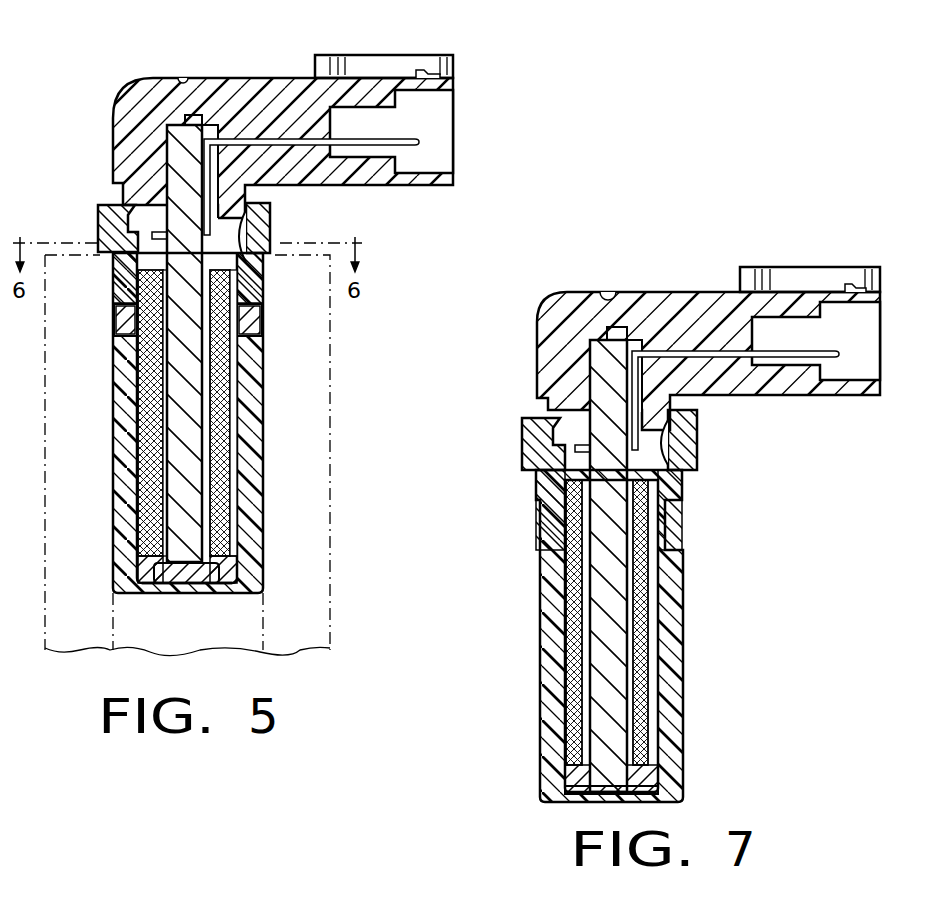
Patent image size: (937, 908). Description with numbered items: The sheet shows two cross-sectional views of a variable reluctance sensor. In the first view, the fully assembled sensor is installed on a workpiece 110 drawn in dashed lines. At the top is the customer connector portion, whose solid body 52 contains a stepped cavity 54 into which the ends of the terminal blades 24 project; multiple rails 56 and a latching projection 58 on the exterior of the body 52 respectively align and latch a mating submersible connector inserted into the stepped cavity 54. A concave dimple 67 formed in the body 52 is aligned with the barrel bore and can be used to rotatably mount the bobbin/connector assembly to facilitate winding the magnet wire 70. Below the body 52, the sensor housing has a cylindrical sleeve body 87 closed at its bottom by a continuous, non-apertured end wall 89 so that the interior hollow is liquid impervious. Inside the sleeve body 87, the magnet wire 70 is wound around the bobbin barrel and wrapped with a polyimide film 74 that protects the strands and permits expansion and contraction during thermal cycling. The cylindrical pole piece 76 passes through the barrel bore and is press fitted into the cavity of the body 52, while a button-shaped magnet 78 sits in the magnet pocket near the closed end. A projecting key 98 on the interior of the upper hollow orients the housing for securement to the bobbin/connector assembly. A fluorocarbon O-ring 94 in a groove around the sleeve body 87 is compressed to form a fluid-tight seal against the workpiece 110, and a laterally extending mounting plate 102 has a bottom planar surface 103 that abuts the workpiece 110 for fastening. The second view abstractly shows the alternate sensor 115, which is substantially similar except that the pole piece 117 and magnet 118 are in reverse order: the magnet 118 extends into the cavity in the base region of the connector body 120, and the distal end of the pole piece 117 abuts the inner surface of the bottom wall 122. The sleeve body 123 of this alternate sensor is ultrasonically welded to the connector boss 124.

In FIG. 5, the body 52 is at (127, 110).
In FIG. 5, the concave dimple 67 is at (182, 77).
In FIG. 5, the terminal blades 24 is at (273, 142).
In FIG. 7, the terminal blades 24 is at (720, 360).
In FIG. 5, the rails 56 is at (352, 62).
In FIG. 5, the latching projection 58 is at (426, 72).
In FIG. 5, the stepped cavity 54 is at (440, 107).
In FIG. 5, the key 98 is at (120, 228).
In FIG. 5, the mounting plate 102 is at (268, 228).
In FIG. 5, the planar surface 103 is at (258, 250).
In FIG. 5, the O-ring 94 is at (110, 330).
In FIG. 5, the sleeve body 87 is at (124, 386).
In FIG. 5, the workpiece 110 is at (330, 408).
In FIG. 5, the pole piece 76 is at (180, 480).
In FIG. 5, the polyimide film 74 is at (235, 485).
In FIG. 5, the magnet wire 70 is at (240, 515).
In FIG. 5, the magnet 78 is at (172, 576).
In FIG. 5, the end wall 89 is at (190, 587).
In FIG. 7, the sensor 115 is at (679, 507).
In FIG. 7, the connector body 120 is at (670, 312).
In FIG. 7, the magnet 118 is at (598, 368).
In FIG. 7, the connector boss 124 is at (566, 405).
In FIG. 7, the pole piece 117 is at (615, 620).
In FIG. 7, the sleeve body 123 is at (548, 632).
In FIG. 7, the bottom wall 122 is at (610, 800).